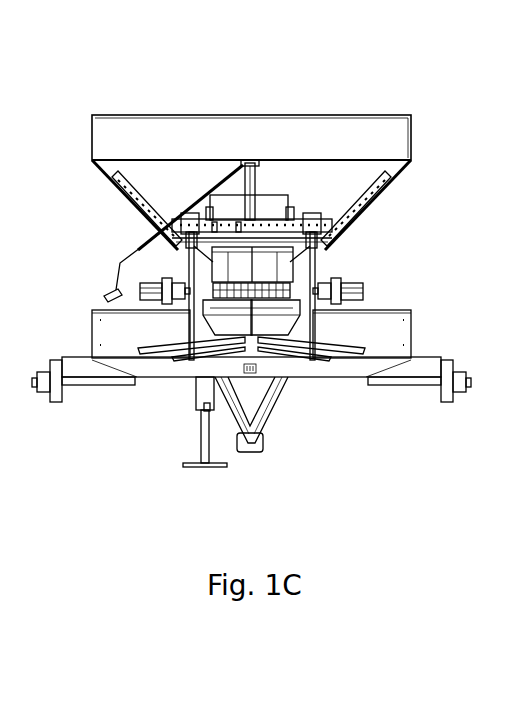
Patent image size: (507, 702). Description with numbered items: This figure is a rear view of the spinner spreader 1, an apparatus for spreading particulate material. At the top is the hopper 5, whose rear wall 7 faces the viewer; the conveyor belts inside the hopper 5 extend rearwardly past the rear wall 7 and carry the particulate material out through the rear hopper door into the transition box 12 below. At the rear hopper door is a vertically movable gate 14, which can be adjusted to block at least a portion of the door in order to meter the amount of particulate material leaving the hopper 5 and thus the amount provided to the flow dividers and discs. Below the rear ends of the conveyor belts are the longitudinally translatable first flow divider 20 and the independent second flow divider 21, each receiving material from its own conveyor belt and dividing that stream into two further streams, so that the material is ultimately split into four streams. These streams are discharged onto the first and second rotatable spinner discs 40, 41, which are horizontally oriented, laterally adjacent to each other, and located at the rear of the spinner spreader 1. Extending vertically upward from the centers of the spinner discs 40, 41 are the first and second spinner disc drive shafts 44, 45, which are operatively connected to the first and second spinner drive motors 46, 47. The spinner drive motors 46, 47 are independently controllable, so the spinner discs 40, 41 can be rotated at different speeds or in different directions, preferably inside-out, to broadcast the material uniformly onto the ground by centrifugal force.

The spinner spreader 1 is at (466, 120).
The hopper 5 is at (383, 168).
The rear wall 7 is at (335, 130).
The transition box 12 is at (270, 263).
The gate 14 is at (267, 199).
The first flow divider 20 is at (210, 347).
The second flow divider 21 is at (283, 347).
The first spinner disc 40 is at (187, 357).
The second spinner disc 41 is at (315, 353).
The first spinner disc drive shaft 44 is at (190, 327).
The second spinner disc drive shaft 45 is at (313, 327).
The first spinner drive motor 46 is at (164, 224).
The second spinner drive motor 47 is at (333, 219).